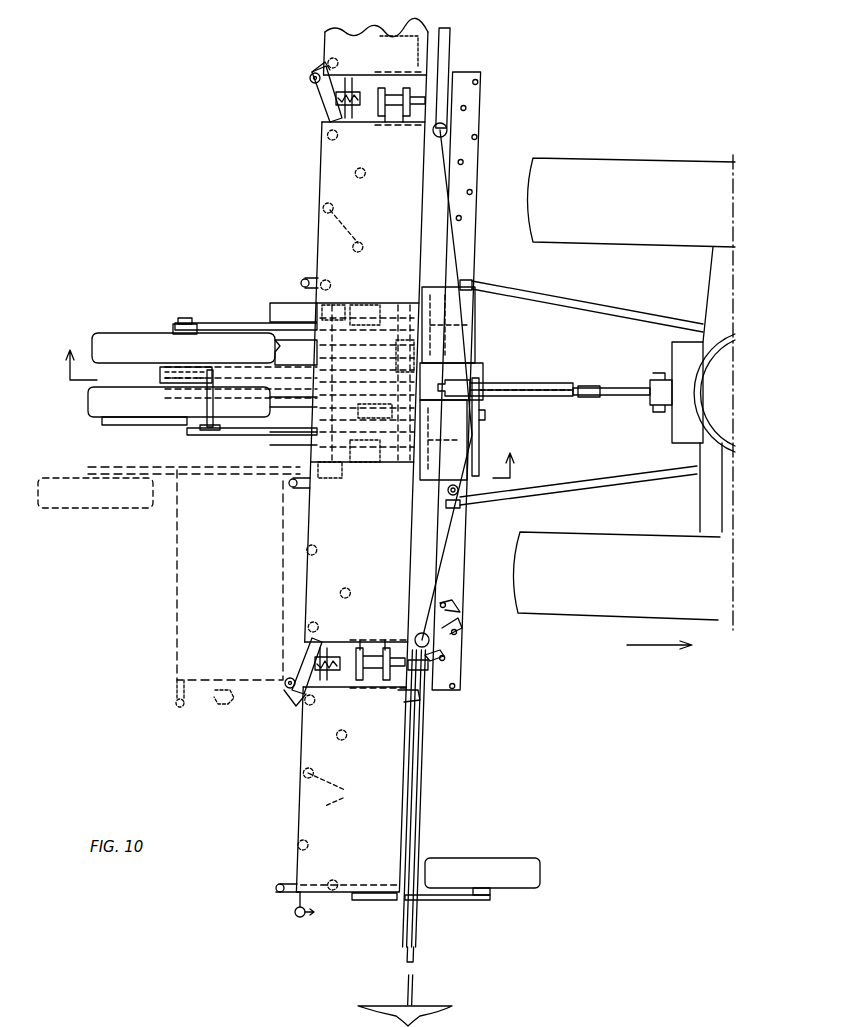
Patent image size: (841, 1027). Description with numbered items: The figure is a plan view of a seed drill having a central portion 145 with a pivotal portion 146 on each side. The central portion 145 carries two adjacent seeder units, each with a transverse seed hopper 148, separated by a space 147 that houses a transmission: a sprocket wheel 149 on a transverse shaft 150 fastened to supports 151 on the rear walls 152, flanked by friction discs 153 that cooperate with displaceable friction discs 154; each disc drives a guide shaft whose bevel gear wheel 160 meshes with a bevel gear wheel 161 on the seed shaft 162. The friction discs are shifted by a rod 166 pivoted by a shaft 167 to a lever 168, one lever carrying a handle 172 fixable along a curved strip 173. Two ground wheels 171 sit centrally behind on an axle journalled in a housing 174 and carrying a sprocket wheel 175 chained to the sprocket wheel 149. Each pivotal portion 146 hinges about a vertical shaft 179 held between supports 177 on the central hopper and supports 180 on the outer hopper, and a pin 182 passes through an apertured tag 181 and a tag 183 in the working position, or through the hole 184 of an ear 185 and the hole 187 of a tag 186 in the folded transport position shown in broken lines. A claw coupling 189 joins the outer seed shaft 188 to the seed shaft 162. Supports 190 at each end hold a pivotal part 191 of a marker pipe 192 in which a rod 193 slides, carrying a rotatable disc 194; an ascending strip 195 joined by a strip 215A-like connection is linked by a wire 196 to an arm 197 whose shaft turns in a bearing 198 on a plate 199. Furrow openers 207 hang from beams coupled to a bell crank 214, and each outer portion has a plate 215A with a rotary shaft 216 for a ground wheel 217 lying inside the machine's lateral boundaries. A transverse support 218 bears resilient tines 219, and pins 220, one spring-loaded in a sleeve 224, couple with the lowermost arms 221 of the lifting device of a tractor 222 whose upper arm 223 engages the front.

The central portion 145 is at (324, 216).
The pivotal portion 146 is at (325, 34).
The space 147 is at (340, 318).
The seed hopper 148 is at (412, 34).
The sprocket wheel 149 is at (408, 334).
The shaft 150 is at (358, 330).
The support 151 is at (306, 358).
The rear wall 152 is at (312, 312).
The friction disc 153 is at (308, 410).
The friction disc 154 is at (470, 303).
The bevel gear wheel 160 is at (362, 312).
The bevel gear wheel 161 is at (376, 412).
The seed shaft 162 is at (338, 470).
The rod 166 is at (242, 322).
The shaft 167 is at (186, 316).
The lever 168 is at (172, 326).
The ground wheel 171 is at (125, 380).
The handle 172 is at (188, 432).
The curved strip 173 is at (116, 428).
The housing 174 is at (252, 362).
The sprocket wheel 175 is at (165, 360).
The support 177 is at (322, 118).
The shaft 179 is at (308, 78).
The support 180 is at (316, 68).
The apertured tag 181 is at (440, 650).
The pin 182 is at (438, 666).
The tag 183 is at (180, 702).
The hole 184 is at (298, 282).
The ear 185 is at (304, 276).
The tag 186 is at (282, 880).
The hole 187 is at (276, 898).
The seed shaft 188 is at (258, 702).
The claw coupling 189 is at (332, 100).
The support 190 is at (388, 118).
The pivotal part 191 is at (396, 85).
The pipe 192 is at (452, 56).
The rod 193 is at (390, 976).
The rotatable disc 194 is at (442, 1010).
The ascending strip 195 is at (454, 38).
The wire 196 is at (458, 238).
The arm 197 is at (480, 440).
The bearing 198 is at (480, 376).
The plate 199 is at (480, 364).
The furrow opener 207 is at (292, 938).
The bell crank 214 is at (370, 906).
The plate 215A is at (458, 905).
The rotary shaft 216 is at (495, 896).
The ground wheel 217 is at (60, 512).
The support 218 is at (460, 600).
The resilient tine 219 is at (462, 622).
The pin 220 is at (472, 270).
The lowermost arm 221 is at (612, 302).
The tractor 222 is at (696, 163).
The upper arm 223 is at (578, 398).
The sleeve 224 is at (468, 490).